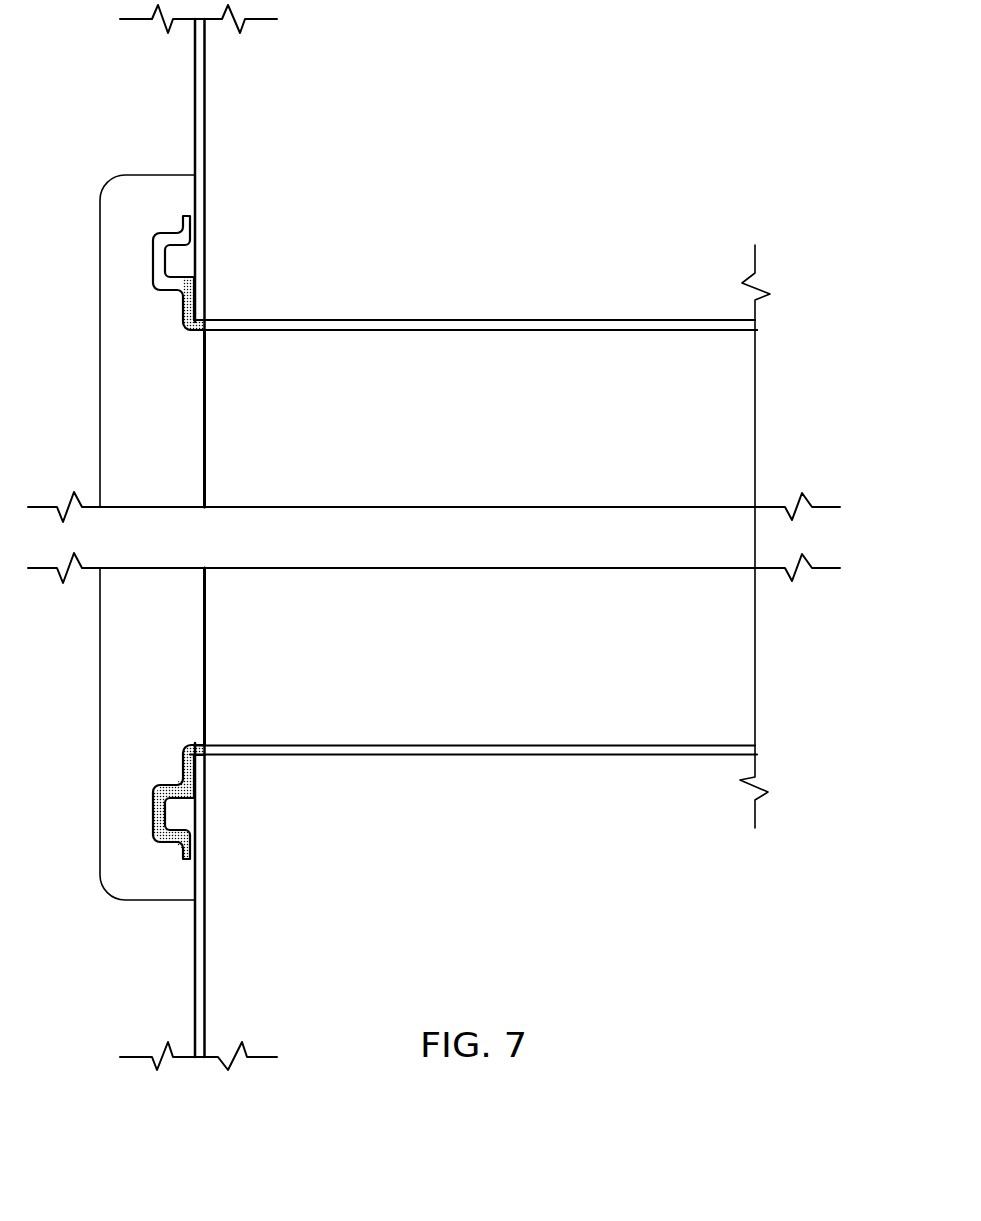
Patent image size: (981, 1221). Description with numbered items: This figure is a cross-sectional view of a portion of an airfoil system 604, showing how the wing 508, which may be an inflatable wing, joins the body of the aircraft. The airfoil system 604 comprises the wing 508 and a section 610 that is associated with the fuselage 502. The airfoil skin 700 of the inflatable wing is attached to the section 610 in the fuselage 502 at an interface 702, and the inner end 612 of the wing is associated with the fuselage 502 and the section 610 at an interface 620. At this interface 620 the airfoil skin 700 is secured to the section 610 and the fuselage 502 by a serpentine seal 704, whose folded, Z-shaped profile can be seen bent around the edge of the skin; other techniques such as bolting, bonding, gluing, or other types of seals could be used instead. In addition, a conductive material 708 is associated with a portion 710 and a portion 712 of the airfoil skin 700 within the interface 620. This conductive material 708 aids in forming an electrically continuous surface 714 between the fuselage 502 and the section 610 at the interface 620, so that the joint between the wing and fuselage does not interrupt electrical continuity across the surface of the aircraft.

The fuselage 502 is at (205, 142).
The wing 508 is at (540, 327).
The airfoil system 604 is at (614, 139).
The section 610 is at (100, 362).
The inner end 612 is at (227, 318).
The interface 620 is at (219, 208).
The airfoil skin 700 is at (475, 318).
The interface 702 is at (262, 348).
The serpentine seal 704 is at (153, 238).
The conductive material 708 is at (187, 331).
The portion 710 is at (222, 334).
The portion 712 is at (208, 766).
The electrically continuous surface 714 is at (229, 254).